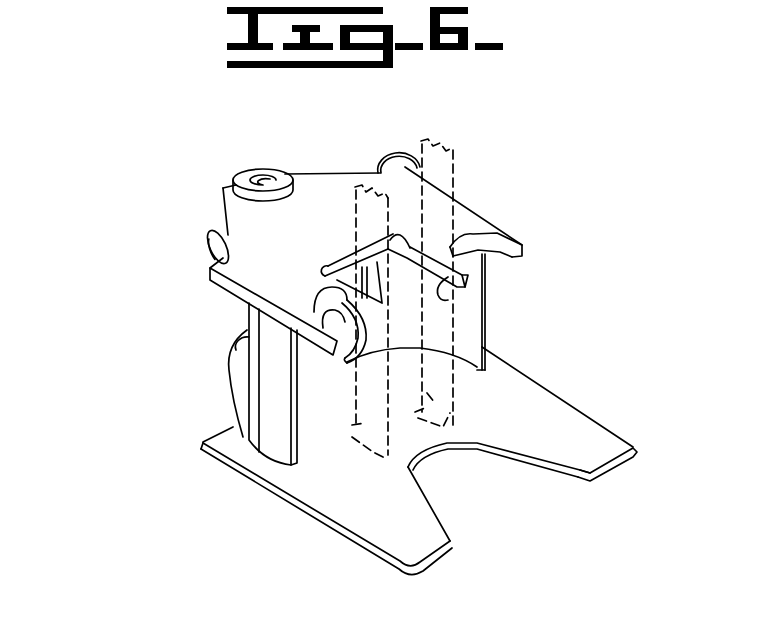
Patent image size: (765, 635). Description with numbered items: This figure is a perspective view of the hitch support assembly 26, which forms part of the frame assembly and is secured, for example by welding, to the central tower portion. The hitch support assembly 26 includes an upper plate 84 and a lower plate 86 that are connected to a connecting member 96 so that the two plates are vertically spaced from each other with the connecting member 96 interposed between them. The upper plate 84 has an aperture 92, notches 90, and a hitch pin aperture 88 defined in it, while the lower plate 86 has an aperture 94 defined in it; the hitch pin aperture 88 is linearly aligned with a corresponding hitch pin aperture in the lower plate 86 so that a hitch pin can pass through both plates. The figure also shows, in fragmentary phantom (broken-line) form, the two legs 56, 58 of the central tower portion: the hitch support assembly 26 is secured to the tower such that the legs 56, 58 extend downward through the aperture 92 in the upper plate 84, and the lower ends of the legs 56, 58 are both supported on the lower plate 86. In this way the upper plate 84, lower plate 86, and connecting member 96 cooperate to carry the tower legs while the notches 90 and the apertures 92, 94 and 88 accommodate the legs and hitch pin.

The hitch support assembly 26 is at (205, 176).
The leg 56 is at (352, 427).
The leg 58 is at (450, 410).
The upper plate 84 is at (343, 192).
The lower plate 86 is at (390, 517).
The hitch pin aperture 88 is at (277, 180).
The notches 90 is at (498, 253).
The aperture 92 is at (445, 300).
The aperture 94 is at (520, 458).
The connecting member 96 is at (272, 395).